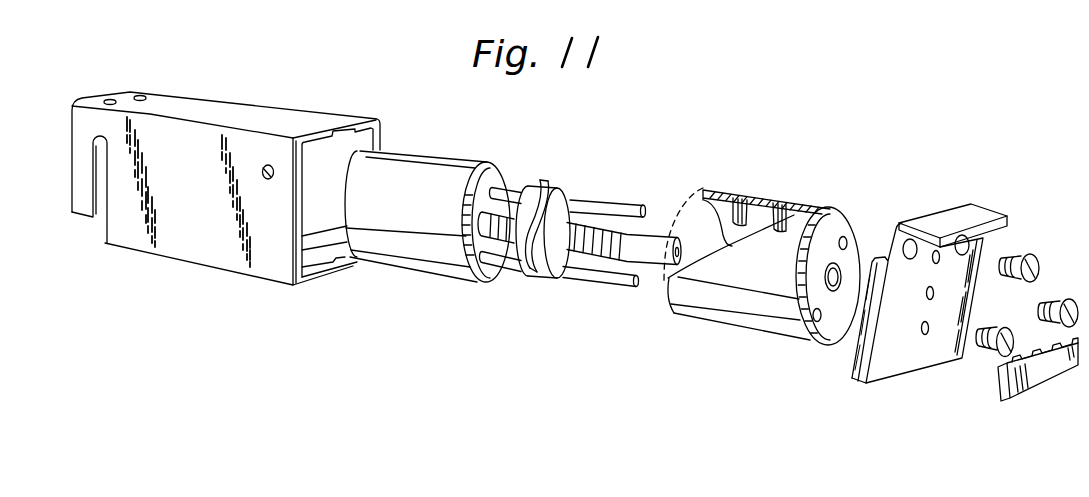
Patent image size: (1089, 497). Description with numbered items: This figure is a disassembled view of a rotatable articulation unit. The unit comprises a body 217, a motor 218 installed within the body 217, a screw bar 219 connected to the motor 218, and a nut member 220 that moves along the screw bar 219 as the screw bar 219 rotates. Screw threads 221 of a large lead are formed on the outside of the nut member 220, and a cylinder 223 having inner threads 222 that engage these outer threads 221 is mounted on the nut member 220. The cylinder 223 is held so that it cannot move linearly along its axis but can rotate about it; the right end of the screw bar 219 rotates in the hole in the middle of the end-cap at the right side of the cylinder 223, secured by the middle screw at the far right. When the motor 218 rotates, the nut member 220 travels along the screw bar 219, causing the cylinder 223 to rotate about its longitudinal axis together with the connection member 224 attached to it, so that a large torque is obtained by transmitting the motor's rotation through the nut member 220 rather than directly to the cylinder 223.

The body 217 is at (279, 115).
The motor 218 is at (427, 164).
The screw bar 219 is at (620, 208).
The nut member 220 is at (563, 186).
The screw threads 221 is at (527, 275).
The inner threads 222 is at (758, 196).
The cylinder 223 is at (822, 207).
The connection member 224 is at (951, 219).